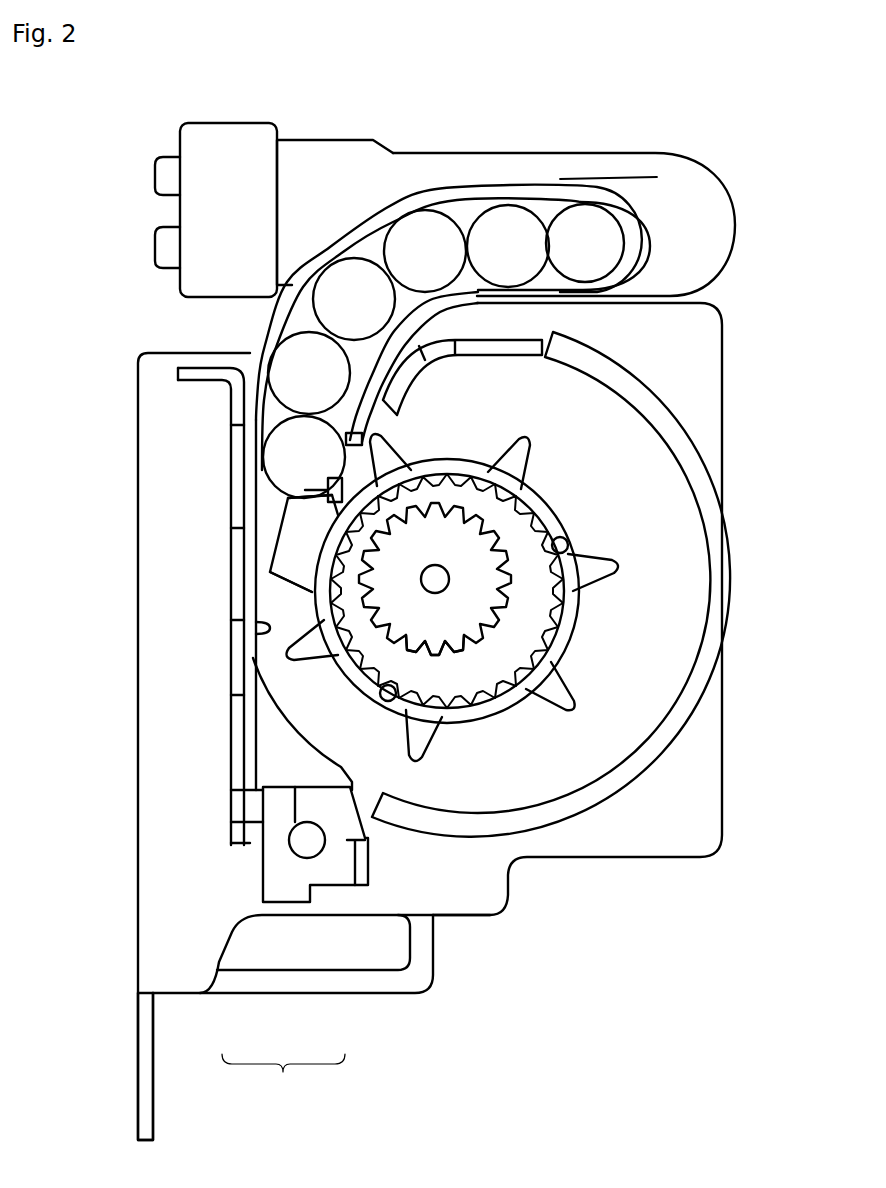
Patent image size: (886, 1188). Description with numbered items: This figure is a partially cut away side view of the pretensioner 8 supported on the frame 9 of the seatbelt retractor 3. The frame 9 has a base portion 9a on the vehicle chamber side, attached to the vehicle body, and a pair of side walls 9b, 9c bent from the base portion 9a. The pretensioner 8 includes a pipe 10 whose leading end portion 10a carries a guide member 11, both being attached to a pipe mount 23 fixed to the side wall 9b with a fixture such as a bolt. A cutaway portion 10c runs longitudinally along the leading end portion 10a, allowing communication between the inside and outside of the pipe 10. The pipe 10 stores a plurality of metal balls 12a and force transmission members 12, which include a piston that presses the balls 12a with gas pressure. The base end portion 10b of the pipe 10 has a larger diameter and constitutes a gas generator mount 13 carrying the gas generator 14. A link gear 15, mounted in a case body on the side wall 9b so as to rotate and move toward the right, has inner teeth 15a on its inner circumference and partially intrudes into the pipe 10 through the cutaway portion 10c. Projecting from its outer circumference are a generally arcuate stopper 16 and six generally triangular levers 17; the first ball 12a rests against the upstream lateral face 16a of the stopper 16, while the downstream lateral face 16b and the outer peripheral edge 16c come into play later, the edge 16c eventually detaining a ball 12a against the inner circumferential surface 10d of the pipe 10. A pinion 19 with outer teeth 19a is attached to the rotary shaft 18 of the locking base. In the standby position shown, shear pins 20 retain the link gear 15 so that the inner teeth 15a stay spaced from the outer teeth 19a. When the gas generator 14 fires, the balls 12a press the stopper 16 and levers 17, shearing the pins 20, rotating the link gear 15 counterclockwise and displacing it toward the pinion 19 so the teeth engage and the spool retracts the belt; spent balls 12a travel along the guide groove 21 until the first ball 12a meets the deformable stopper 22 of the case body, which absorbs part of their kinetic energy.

The seatbelt retractor 3 is at (598, 862).
The pretensioner 8 is at (602, 126).
The frame 9 is at (283, 1078).
The base portion 9a is at (145, 1028).
The side wall 9b is at (365, 897).
The side wall 9c is at (368, 982).
The pipe 10 is at (700, 225).
The leading end portion 10a is at (253, 757).
The base end portion 10b is at (487, 165).
The cutaway portion 10c is at (255, 464).
The inner circumferential surface 10d is at (255, 628).
The guide member 11 is at (270, 857).
The force transmission member 12 is at (518, 222).
The ball 12a is at (502, 218).
The gas generator mount 13 is at (288, 165).
The gas generator 14 is at (175, 215).
The link gear 15 is at (542, 508).
The inner teeth 15a is at (548, 654).
The stopper 16 is at (287, 545).
The lateral face 16a is at (330, 478).
The lateral face 16b is at (282, 584).
The outer peripheral edge 16c is at (290, 513).
The lever 17 is at (512, 452).
The rotary shaft 18 is at (438, 590).
The pinion 19 is at (446, 558).
The outer teeth 19a is at (493, 618).
The shear pin 20 is at (566, 537).
The guide groove 21 is at (712, 578).
The stopper 22 is at (400, 407).
The pipe mount 23 is at (237, 655).